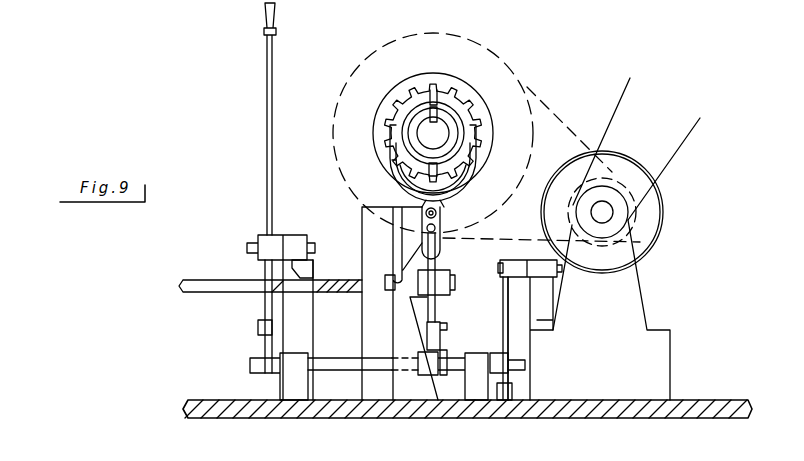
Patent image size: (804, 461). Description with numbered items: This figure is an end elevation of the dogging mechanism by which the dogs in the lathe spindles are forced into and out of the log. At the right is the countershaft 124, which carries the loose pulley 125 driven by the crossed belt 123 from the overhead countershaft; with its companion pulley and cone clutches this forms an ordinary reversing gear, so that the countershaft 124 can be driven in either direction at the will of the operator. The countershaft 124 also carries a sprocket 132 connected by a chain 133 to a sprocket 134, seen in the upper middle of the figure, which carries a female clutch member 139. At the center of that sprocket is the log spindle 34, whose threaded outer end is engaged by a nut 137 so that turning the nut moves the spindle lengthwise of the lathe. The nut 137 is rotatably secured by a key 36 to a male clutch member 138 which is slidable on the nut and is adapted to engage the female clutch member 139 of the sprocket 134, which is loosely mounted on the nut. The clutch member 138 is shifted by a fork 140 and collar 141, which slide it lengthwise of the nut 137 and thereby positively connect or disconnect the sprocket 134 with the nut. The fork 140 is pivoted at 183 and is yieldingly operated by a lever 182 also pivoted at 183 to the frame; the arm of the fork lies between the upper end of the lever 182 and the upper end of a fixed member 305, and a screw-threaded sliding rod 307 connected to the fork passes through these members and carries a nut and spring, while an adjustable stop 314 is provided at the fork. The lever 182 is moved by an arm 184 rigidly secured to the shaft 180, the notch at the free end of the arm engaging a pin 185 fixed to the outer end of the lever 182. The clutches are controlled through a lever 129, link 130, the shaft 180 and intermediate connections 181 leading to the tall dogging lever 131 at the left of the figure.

The dogging lever 131 is at (267, 114).
The sprocket 134 is at (365, 56).
The chain 133 is at (548, 103).
The female clutch member 139 is at (432, 73).
The male clutch member 138 is at (405, 95).
The nut 137 is at (452, 123).
The key 36 is at (443, 108).
The log spindle 34 is at (432, 132).
The sliding rod 307 is at (447, 166).
The fork 140 is at (398, 165).
The collar 141 is at (416, 160).
The adjustable stop 314 is at (440, 209).
The fixed member 305 is at (396, 250).
The pivot 183 is at (450, 282).
The lever 182 is at (421, 308).
The pin 185 is at (447, 328).
The arm 184 is at (440, 352).
The lever 129 is at (506, 320).
The link 130 is at (513, 390).
The sprocket 132 is at (590, 178).
The loose pulley 125 is at (653, 172).
The countershaft 124 is at (607, 208).
The crossed belt 123 is at (700, 118).
The intermediate connections 181 is at (265, 348).
The shaft 180 is at (345, 363).